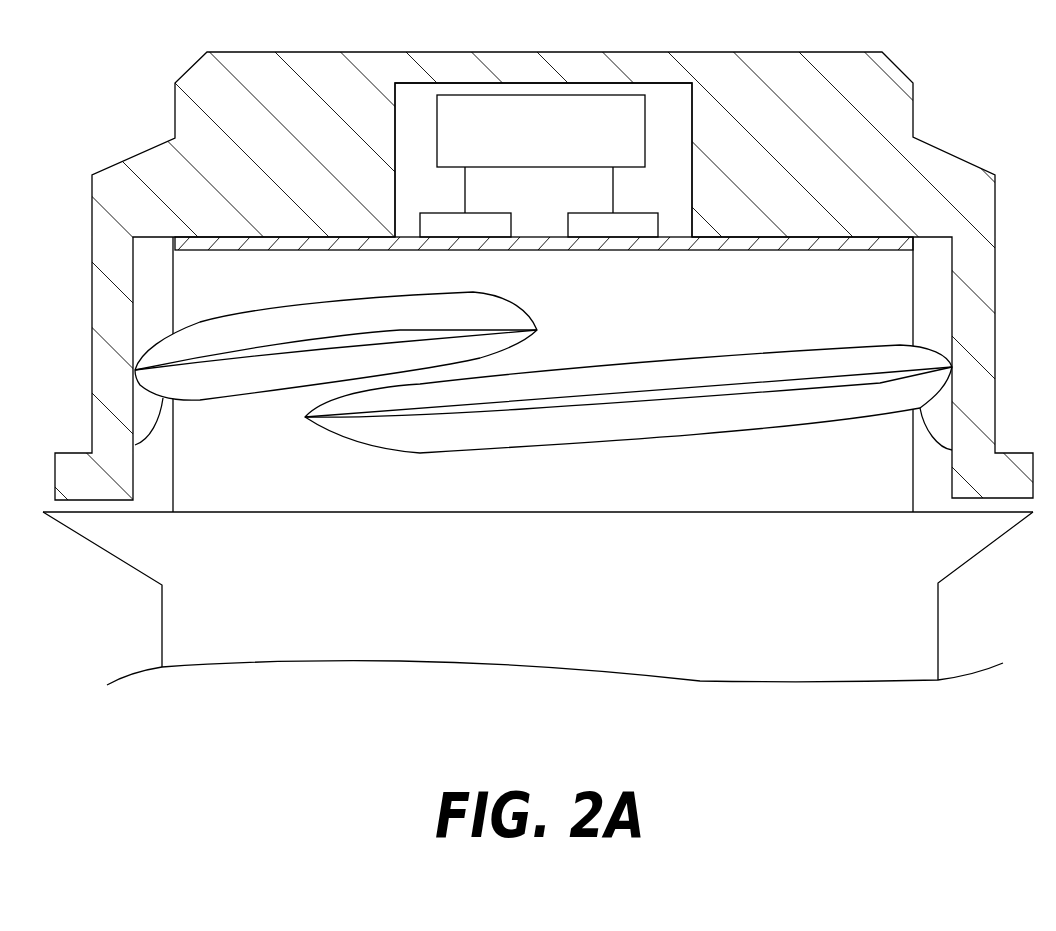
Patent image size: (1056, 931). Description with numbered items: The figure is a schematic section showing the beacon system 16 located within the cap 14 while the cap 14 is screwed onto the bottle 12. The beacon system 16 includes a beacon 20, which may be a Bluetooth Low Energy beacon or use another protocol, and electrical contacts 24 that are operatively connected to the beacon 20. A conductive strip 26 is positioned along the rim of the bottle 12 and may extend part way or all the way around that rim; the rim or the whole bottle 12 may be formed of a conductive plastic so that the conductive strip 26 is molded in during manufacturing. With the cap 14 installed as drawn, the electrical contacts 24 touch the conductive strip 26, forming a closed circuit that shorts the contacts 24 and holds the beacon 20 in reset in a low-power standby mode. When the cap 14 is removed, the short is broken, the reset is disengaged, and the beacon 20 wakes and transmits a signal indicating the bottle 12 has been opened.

The bottle 12 is at (938, 630).
The cap 14 is at (957, 153).
The beacon system 16 is at (618, 83).
The beacon 20 is at (529, 141).
The electrical contacts 24 is at (420, 225).
The conductive strip 26 is at (913, 243).